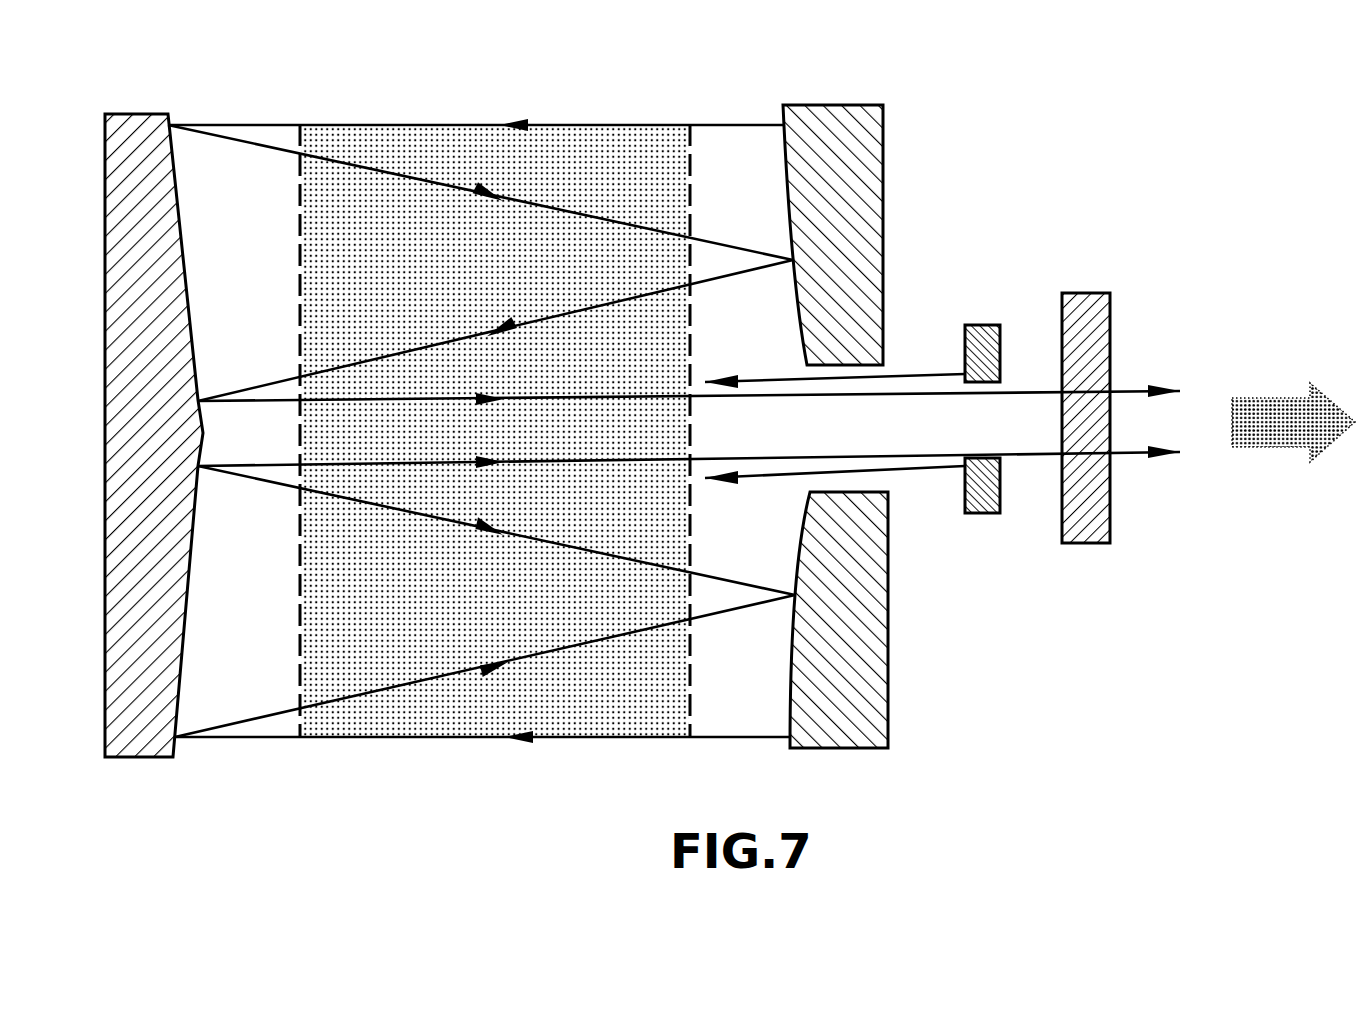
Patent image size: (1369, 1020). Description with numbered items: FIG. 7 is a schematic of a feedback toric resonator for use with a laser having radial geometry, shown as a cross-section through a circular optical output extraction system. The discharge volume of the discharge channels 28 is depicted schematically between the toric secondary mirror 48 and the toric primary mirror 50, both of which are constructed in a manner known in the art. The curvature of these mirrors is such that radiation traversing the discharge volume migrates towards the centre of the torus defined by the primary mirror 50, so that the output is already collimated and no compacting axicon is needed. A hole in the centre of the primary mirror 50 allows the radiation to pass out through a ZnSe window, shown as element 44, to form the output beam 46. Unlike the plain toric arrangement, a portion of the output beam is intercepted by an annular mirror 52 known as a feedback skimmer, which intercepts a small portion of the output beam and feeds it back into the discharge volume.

The discharge channels 28 is at (330, 133).
The output coupler 44 is at (1105, 561).
The output beam 46 is at (1265, 372).
The toric secondary mirror 48 is at (127, 778).
The toric primary mirror 50 is at (872, 773).
The annular mirror 52 is at (986, 305).